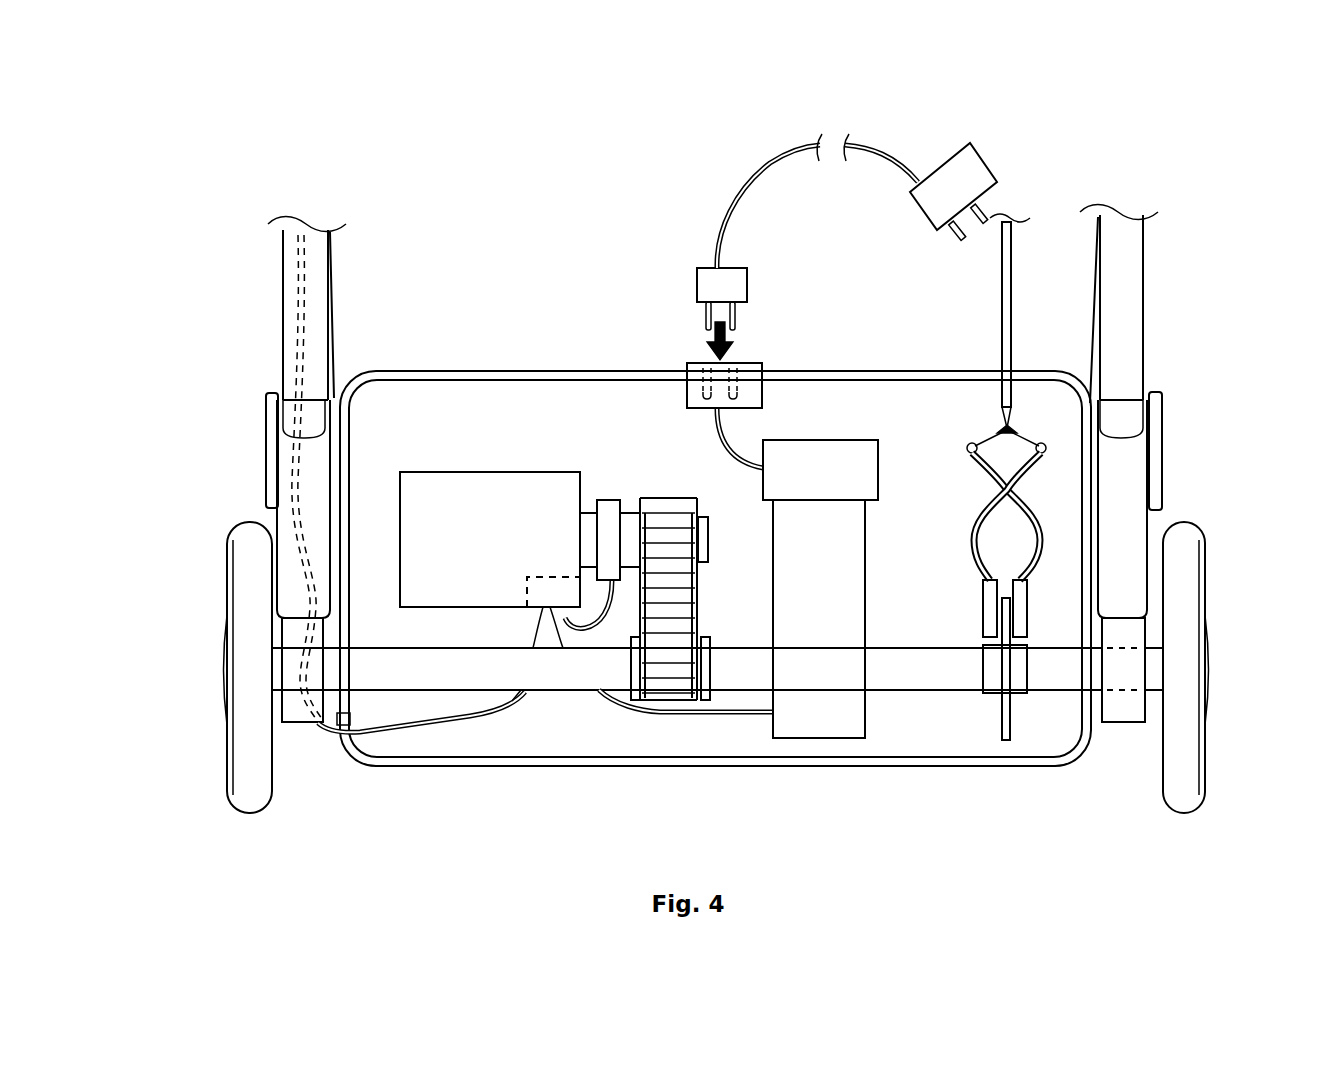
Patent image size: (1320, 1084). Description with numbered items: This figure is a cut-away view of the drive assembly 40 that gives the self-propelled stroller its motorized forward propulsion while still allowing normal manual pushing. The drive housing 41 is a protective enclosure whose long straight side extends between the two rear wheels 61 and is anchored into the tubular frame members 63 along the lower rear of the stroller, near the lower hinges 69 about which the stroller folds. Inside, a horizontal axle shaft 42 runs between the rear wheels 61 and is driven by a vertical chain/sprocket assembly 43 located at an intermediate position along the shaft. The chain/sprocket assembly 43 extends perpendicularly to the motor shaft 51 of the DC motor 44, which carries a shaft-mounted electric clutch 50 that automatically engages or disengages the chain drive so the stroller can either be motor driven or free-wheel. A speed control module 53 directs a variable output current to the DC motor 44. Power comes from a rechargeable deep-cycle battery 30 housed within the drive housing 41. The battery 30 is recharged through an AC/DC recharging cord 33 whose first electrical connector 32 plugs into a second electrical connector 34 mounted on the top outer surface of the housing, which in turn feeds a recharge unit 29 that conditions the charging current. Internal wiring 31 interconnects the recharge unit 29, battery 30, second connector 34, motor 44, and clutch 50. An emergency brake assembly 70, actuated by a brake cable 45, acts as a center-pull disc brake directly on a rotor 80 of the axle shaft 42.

The recharge unit 29 is at (785, 482).
The battery 30 is at (833, 503).
The internal wiring 31 is at (297, 278).
The first electrical connector 32 is at (700, 282).
The AC/DC recharging cord 33 is at (893, 160).
The second electrical connector 34 is at (690, 372).
The drive assembly 40 is at (523, 218).
The drive housing 41 is at (412, 373).
The axle shaft 42 is at (370, 685).
The chain/sprocket assembly 43 is at (656, 498).
The DC motor 44 is at (515, 490).
The brake cable 45 is at (1010, 295).
The electric clutch 50 is at (597, 500).
The motor shaft 51 is at (707, 544).
The speed control module 53 is at (527, 588).
The rear wheels 61 is at (228, 735).
The frame members 63 is at (284, 334).
The lower hinges 69 is at (267, 451).
The emergency brake assembly 70 is at (960, 404).
The rotor 80 is at (1005, 724).